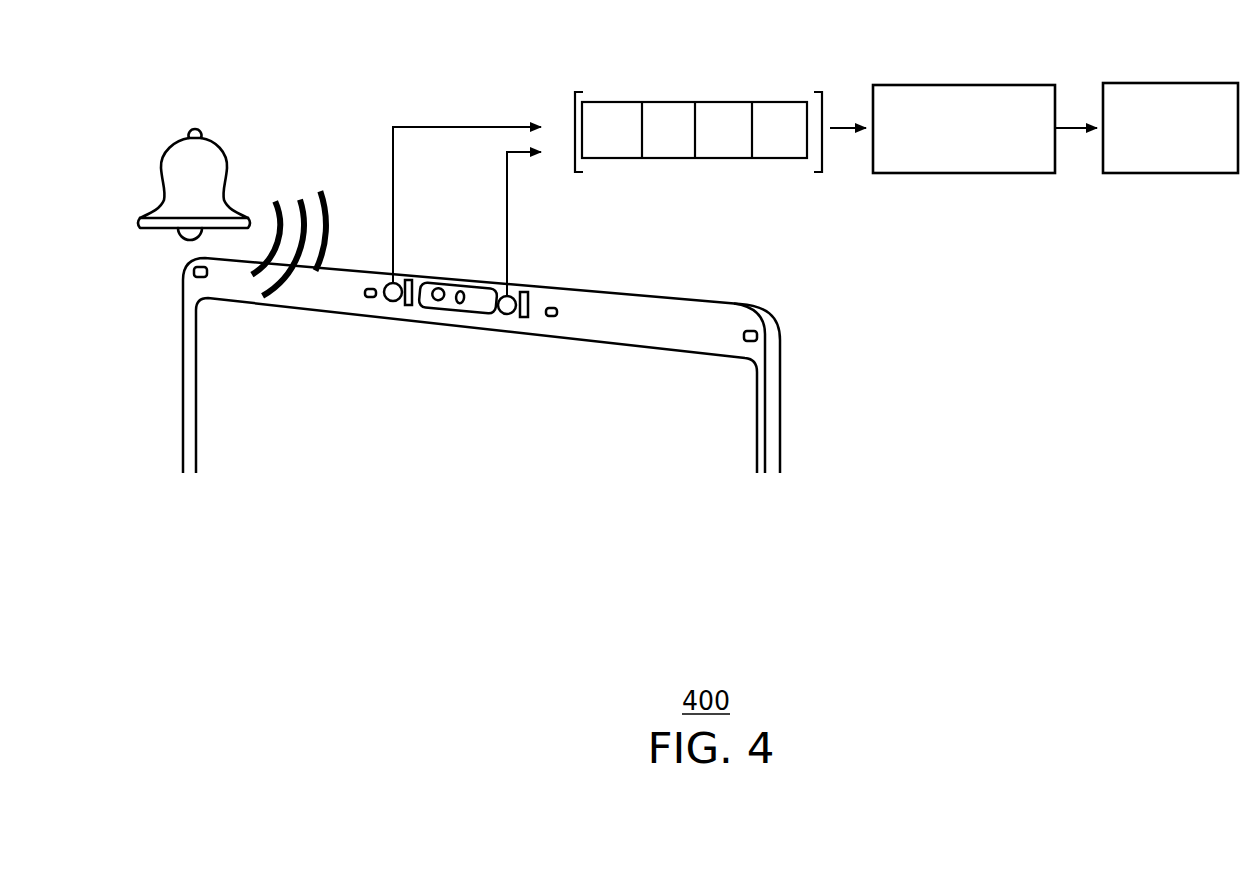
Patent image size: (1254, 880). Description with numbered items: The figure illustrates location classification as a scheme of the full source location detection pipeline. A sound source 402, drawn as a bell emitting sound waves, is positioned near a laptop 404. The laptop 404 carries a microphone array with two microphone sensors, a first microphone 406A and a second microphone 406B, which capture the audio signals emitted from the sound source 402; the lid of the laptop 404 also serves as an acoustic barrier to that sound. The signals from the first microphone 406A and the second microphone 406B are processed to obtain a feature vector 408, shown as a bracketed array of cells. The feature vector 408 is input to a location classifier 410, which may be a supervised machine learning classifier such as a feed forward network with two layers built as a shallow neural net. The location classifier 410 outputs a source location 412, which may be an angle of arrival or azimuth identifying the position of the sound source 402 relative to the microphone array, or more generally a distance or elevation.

The sound source 402 is at (177, 138).
The laptop 404 is at (183, 356).
The first microphone 406A is at (395, 221).
The second microphone 406B is at (509, 244).
The feature vector 408 is at (682, 72).
The location classifier 410 is at (950, 85).
The source location 412 is at (1173, 83).